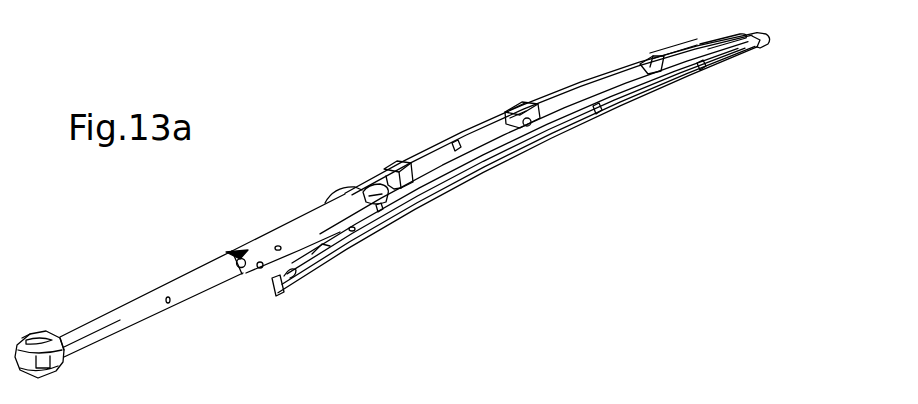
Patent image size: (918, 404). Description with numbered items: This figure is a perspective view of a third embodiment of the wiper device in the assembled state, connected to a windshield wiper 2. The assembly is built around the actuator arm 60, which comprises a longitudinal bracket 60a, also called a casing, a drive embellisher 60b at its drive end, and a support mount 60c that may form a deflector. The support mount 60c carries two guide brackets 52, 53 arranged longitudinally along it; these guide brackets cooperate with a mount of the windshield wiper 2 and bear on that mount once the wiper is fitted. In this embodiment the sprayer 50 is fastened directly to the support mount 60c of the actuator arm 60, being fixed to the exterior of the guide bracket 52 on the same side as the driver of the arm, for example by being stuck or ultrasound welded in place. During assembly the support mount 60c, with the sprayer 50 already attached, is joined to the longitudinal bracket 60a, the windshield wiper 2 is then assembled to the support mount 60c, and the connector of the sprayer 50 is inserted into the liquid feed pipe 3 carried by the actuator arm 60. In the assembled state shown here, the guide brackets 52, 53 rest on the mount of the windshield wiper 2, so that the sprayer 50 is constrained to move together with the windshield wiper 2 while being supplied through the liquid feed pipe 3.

The windshield wiper 2 is at (648, 82).
The liquid feed pipe 3 is at (363, 210).
The sprayer 50 is at (398, 166).
The guide bracket 52 is at (375, 186).
The guide bracket 53 is at (656, 60).
The actuator arm 60 is at (277, 208).
The longitudinal bracket 60a is at (283, 232).
The drive embellisher 60b is at (122, 328).
The support mount 60c is at (513, 102).